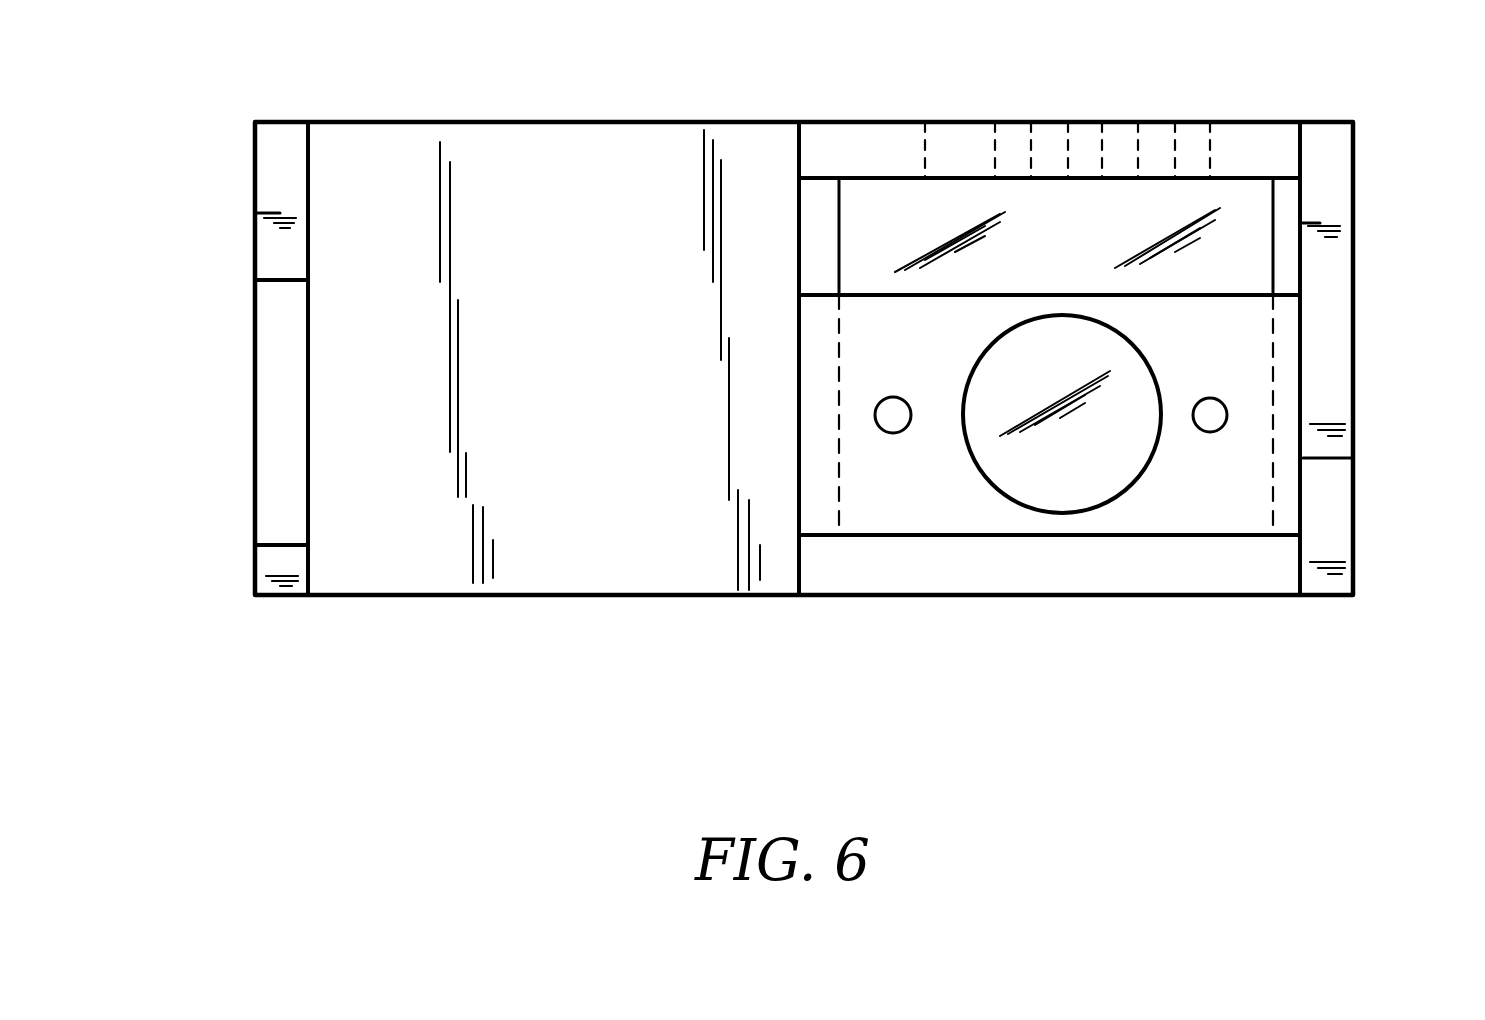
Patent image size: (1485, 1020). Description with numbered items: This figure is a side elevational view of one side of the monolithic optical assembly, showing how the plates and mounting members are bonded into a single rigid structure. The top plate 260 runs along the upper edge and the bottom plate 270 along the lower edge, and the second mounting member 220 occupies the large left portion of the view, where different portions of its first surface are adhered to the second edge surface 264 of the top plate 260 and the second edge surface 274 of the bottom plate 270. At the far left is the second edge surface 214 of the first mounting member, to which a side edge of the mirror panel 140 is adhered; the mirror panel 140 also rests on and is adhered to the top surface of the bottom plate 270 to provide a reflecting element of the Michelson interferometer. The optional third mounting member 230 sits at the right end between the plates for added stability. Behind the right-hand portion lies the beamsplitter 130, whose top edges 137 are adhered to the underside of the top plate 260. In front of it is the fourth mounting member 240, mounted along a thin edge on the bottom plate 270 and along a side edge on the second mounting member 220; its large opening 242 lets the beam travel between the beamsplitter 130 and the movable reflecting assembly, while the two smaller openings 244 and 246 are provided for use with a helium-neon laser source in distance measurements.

The beamsplitter 130 is at (1234, 198).
The top edges 137 is at (1182, 170).
The mirror panel 140 is at (254, 436).
The second edge surface 214 is at (275, 183).
The second mounting member 220 is at (390, 575).
The third mounting member 230 is at (1362, 122).
The fourth mounting member 240 is at (1206, 510).
The opening 242 is at (1102, 485).
The opening 244 is at (1228, 415).
The opening 246 is at (888, 417).
The top plate 260 is at (852, 110).
The second edge surface 264 is at (826, 140).
The bottom plate 270 is at (902, 603).
The second edge surface 274 is at (1087, 572).